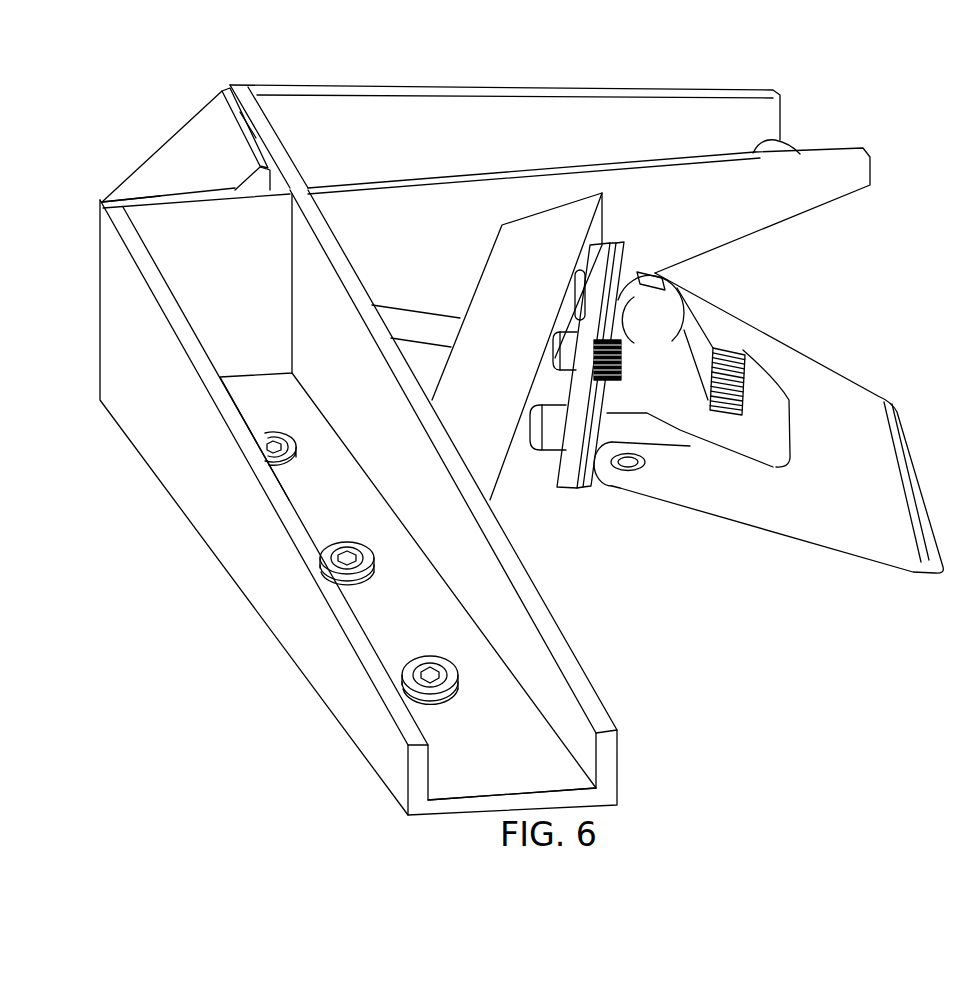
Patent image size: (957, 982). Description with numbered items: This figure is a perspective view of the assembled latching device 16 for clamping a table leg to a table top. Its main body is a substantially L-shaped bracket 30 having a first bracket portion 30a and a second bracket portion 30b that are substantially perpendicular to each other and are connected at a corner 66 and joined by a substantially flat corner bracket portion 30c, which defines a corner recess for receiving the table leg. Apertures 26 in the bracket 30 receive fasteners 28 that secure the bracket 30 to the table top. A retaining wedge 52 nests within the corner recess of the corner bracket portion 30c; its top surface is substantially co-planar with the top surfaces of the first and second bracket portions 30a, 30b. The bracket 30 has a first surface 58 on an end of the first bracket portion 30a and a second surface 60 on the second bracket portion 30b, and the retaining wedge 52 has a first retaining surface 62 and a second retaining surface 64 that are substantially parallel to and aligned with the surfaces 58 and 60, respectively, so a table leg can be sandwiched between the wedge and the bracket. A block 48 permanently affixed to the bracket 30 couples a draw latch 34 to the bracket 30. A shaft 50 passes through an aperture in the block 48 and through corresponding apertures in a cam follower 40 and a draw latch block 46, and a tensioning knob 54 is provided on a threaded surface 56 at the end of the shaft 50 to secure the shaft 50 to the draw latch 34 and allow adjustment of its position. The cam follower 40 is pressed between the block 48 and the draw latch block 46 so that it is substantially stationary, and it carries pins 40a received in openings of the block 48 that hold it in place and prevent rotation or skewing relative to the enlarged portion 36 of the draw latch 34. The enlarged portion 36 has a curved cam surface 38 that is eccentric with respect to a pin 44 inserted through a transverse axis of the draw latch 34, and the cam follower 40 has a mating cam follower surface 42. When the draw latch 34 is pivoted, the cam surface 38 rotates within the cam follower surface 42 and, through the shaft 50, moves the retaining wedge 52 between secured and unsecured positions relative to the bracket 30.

The latching device 16 is at (858, 270).
The apertures 26 is at (772, 140).
The fasteners 28 is at (286, 433).
The bracket 30 is at (857, 172).
The first bracket portion 30a is at (575, 775).
The second bracket portion 30b is at (798, 152).
The corner bracket portion 30c is at (108, 170).
The draw latch 34 is at (850, 512).
The enlarged portion 36 is at (606, 464).
The cam surface 38 is at (588, 456).
The cam follower 40 is at (562, 468).
The pins 40a is at (540, 457).
The cam follower surface 42 is at (576, 462).
The pin 44 is at (628, 468).
The draw latch block 46 is at (657, 308).
The block 48 is at (482, 453).
The shaft 50 is at (410, 310).
The retaining wedge 52 is at (173, 142).
The tensioning knob 54 is at (728, 404).
The threaded surface 56 is at (653, 347).
The first surface 58 is at (140, 195).
The second surface 60 is at (218, 91).
The first retaining surface 62 is at (163, 193).
The second retaining surface 64 is at (248, 122).
The corner 66 is at (312, 196).